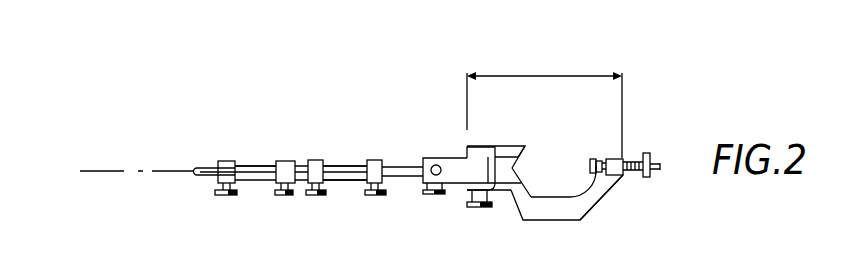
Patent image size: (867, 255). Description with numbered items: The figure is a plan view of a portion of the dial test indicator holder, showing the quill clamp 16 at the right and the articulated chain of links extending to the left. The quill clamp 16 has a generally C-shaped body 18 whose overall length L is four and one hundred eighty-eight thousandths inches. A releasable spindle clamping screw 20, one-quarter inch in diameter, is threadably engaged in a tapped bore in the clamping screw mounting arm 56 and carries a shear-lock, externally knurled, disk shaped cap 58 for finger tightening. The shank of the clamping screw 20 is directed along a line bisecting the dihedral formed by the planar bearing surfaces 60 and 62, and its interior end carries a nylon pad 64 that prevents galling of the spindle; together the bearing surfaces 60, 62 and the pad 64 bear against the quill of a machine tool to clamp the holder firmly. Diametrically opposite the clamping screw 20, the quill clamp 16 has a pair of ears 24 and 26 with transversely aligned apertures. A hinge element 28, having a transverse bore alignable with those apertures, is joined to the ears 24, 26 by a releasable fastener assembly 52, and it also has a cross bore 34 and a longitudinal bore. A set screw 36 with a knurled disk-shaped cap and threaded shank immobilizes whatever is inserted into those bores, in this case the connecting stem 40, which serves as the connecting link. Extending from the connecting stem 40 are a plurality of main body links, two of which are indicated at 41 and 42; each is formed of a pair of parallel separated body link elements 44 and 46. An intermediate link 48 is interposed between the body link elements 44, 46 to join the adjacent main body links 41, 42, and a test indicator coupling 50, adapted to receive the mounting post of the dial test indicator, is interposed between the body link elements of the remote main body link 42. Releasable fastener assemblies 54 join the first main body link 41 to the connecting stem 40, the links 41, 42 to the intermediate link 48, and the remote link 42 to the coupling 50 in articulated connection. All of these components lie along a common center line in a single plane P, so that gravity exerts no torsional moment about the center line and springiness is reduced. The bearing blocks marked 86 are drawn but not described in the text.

The single plane P is at (110, 170).
The quill clamp 16 is at (565, 224).
The C-shaped body 18 is at (590, 207).
The releasable spindle clamping screw 20 is at (630, 162).
The ear 24 is at (478, 146).
The ear 26 is at (497, 189).
The hinge element 28 is at (453, 149).
The cross bore 34 is at (428, 158).
The set screw 36 is at (440, 194).
The connecting stem 40 is at (399, 158).
The main body link 41 is at (344, 198).
The main body link 42 is at (251, 203).
The body link element 44 is at (265, 182).
The body link element 46 is at (249, 165).
The intermediate link 48 is at (298, 161).
The test indicator coupling 50 is at (208, 167).
The releasable fastener assembly 52 is at (469, 214).
The releasable fastener assembly 54 is at (227, 206).
The clamping screw mounting arm 56 is at (615, 170).
The disk shaped cap 58 is at (707, 163).
The planar bearing surface 60 is at (521, 157).
The planar bearing surface 62 is at (517, 172).
The nylon pad 64 is at (590, 166).
The bearing blocks 86 is at (227, 161).
The overall length L is at (544, 106).